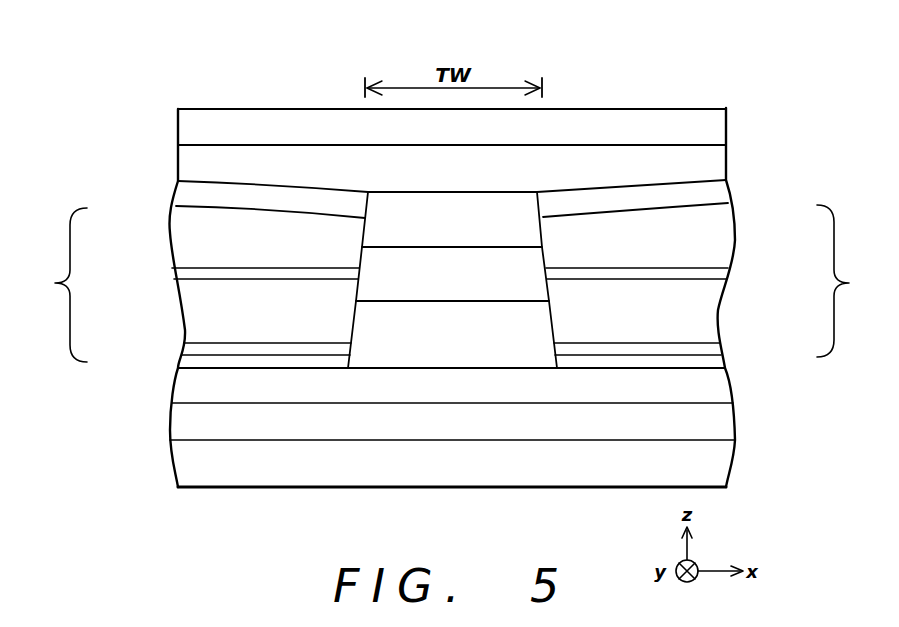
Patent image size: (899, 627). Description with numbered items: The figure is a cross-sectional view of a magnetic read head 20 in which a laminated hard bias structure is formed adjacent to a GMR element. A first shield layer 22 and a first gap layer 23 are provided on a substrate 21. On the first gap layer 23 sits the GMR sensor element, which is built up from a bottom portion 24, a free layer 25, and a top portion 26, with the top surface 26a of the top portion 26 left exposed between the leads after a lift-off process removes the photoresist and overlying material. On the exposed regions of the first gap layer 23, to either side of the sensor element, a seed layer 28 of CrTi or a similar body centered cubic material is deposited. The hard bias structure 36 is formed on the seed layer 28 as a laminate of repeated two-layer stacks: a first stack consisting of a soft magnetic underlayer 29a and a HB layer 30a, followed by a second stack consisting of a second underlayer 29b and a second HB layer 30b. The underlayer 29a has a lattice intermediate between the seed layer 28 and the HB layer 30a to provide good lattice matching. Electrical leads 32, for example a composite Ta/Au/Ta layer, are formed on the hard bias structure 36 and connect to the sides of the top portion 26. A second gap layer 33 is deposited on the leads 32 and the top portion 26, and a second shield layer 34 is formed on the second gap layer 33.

The magnetic read head 20 is at (141, 86).
The substrate 21 is at (712, 462).
The first shield layer 22 is at (712, 418).
The first gap layer 23 is at (714, 387).
The bottom portion 24 is at (395, 350).
The free layer 25 is at (446, 278).
The top portion 26 is at (493, 227).
The top surface 26a is at (515, 192).
The seed layer 28 is at (190, 363).
The soft magnetic underlayer 29a is at (190, 343).
The second underlayer 29b is at (180, 275).
The HB layer 30a is at (195, 308).
The second HB layer 30b is at (185, 226).
The electrical leads 32 is at (190, 186).
The second gap layer 33 is at (192, 155).
The second shield layer 34 is at (188, 121).
The hard bias structure 36 is at (452, 283).